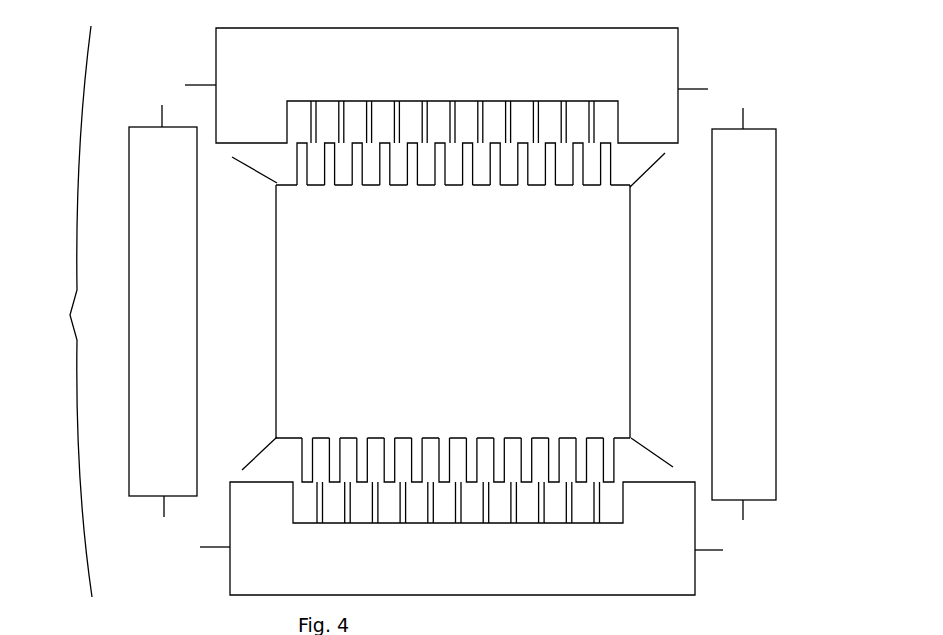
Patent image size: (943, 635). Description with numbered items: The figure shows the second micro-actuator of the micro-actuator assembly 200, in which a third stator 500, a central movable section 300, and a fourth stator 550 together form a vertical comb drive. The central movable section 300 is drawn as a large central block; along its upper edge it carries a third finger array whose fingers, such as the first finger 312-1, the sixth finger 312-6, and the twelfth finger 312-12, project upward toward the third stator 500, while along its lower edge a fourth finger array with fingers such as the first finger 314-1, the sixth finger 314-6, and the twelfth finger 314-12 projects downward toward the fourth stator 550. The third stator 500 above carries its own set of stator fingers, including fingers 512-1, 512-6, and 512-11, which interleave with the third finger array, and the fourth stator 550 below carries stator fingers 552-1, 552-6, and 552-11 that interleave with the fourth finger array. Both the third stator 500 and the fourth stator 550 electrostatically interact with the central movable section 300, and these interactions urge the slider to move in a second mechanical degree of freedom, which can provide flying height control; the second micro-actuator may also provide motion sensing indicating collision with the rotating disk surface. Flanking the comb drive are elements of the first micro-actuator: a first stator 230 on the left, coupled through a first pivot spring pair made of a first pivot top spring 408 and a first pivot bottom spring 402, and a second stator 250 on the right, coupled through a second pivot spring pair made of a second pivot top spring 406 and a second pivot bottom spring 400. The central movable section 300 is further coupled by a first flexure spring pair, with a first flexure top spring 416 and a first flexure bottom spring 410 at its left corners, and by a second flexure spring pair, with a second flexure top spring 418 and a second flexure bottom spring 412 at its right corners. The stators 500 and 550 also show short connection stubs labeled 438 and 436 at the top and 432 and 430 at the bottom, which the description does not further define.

The micro-actuator assembly 200 is at (59, 311).
The first stator 230 is at (163, 311).
The second stator 250 is at (744, 314).
The central movable section 300 is at (463, 316).
The third finger array finger 312-1 is at (304, 187).
The third finger array finger 312-6 is at (441, 187).
The third finger array finger 312-12 is at (606, 187).
The fourth finger array finger 314-1 is at (306, 441).
The fourth finger array finger 314-6 is at (444, 441).
The fourth finger array finger 314-12 is at (609, 442).
The third stator 500 is at (260, 98).
The third stator finger 512-1 is at (314, 101).
The third stator finger 512-6 is at (452, 101).
The third stator finger 512-11 is at (591, 101).
The fourth stator 550 is at (383, 564).
The fourth stator finger 552-1 is at (319, 524).
The fourth stator finger 552-6 is at (458, 524).
The fourth stator finger 552-11 is at (597, 524).
The second pivot bottom spring 400 is at (743, 507).
The first pivot bottom spring 402 is at (164, 505).
The second pivot top spring 406 is at (743, 118).
The first pivot top spring 408 is at (162, 117).
The first flexure bottom spring 410 is at (268, 440).
The second flexure bottom spring 412 is at (645, 448).
The first flexure top spring 416 is at (268, 183).
The second flexure top spring 418 is at (643, 177).
The terminal 430 is at (705, 550).
The terminal 432 is at (222, 547).
The terminal 436 is at (695, 89).
The terminal 438 is at (203, 85).